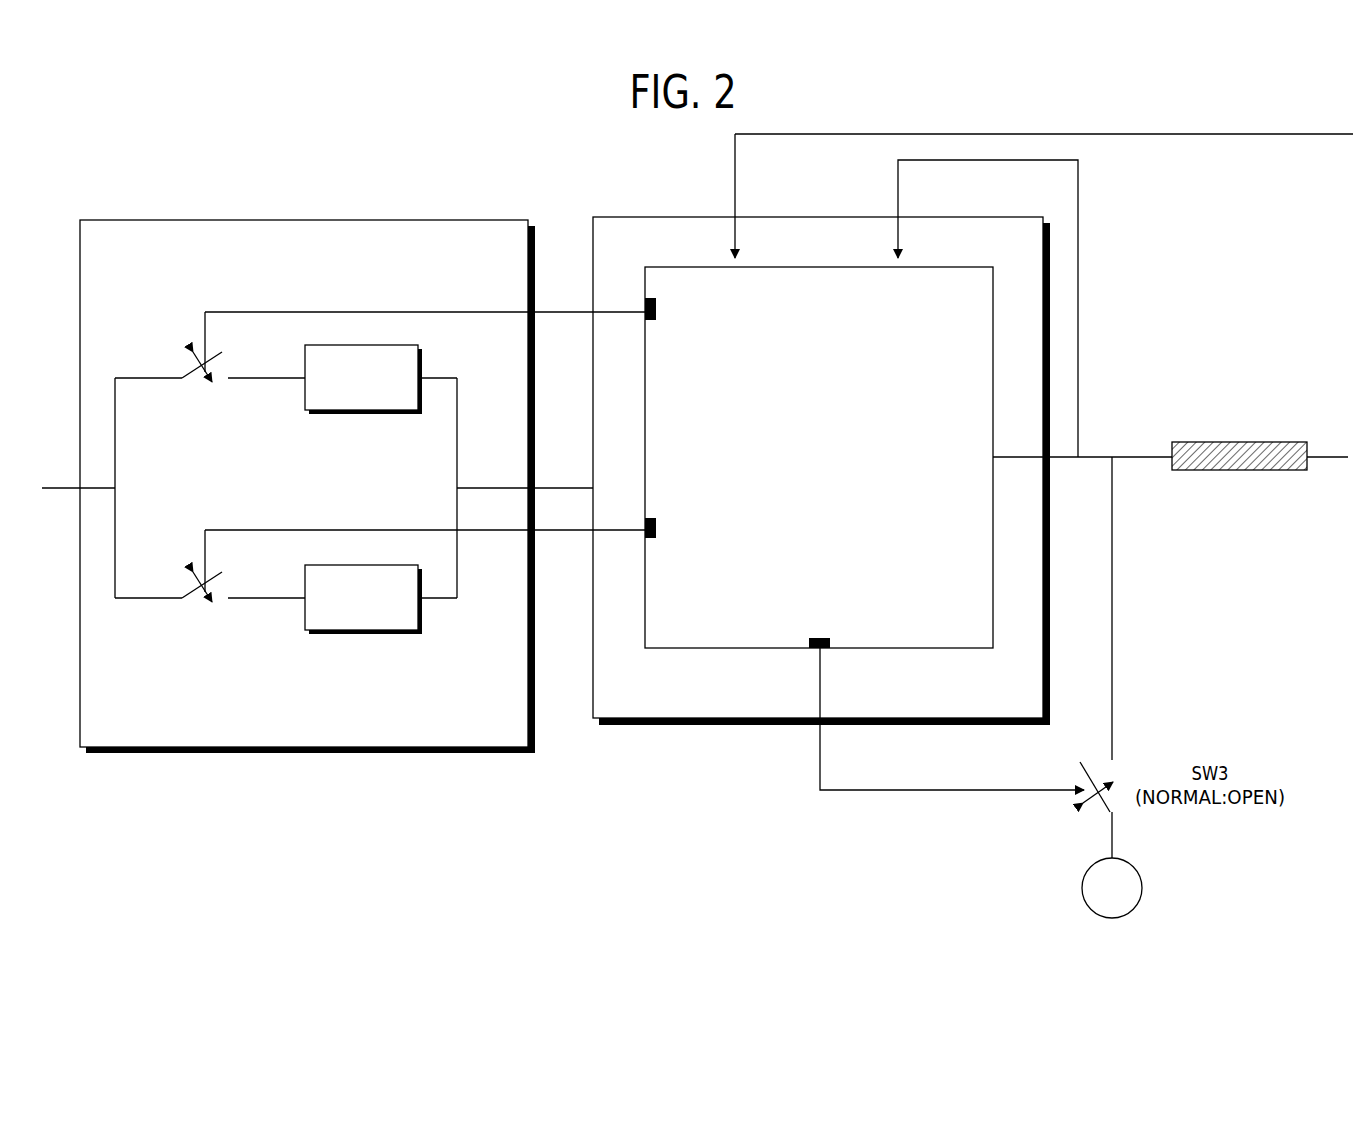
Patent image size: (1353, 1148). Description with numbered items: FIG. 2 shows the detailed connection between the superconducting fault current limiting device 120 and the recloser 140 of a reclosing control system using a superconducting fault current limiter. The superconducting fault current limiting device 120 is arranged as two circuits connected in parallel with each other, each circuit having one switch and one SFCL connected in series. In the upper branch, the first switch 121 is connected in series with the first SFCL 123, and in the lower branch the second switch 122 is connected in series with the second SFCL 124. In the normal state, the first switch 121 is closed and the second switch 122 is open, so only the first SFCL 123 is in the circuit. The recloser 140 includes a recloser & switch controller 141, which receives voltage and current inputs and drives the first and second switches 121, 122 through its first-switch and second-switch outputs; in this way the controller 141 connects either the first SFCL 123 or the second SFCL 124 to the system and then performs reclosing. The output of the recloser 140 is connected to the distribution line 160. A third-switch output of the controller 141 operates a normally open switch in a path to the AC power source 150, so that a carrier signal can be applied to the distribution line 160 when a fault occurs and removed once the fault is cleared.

The superconducting fault current limiting device 120 is at (410, 753).
The first switch (SW1) 121 is at (190, 372).
The second switch (SW2) 122 is at (190, 592).
The first SFCL (SFCL1) 123 is at (340, 414).
The second SFCL (SFCL2) 124 is at (383, 565).
The recloser 140 is at (755, 725).
The recloser & switch controller 141 is at (688, 648).
The AC power source 150 is at (1142, 888).
The distribution line 160 is at (1240, 470).